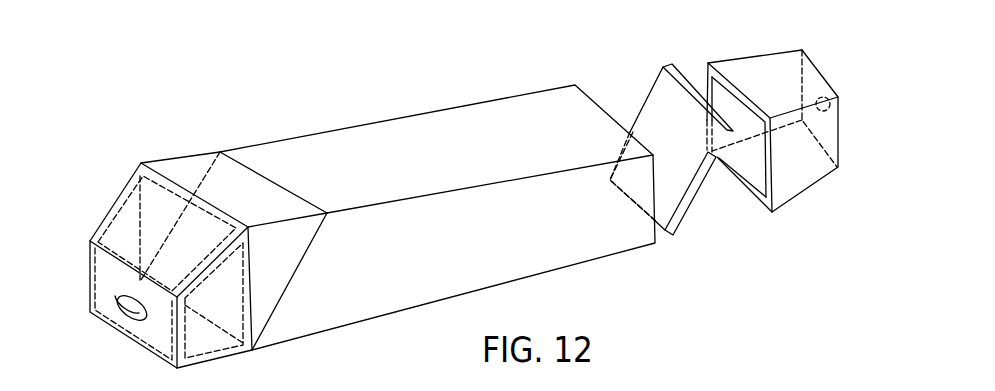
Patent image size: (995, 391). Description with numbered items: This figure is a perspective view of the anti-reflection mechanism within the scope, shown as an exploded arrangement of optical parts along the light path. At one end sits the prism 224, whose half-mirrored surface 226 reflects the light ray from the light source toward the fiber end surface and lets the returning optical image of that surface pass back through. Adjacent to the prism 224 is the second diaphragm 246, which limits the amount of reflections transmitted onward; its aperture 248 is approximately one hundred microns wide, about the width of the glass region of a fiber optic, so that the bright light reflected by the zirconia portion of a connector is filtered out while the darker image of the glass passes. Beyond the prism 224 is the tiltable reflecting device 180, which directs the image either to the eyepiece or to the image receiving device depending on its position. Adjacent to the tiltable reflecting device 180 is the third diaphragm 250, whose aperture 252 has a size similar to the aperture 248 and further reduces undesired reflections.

The tiltable reflecting device 180 is at (672, 190).
The prism 224 is at (405, 285).
The half-mirrored surface 226 is at (310, 248).
The second diaphragm 246 is at (127, 228).
The aperture 248 is at (134, 306).
The third diaphragm 250 is at (785, 67).
The aperture 252 is at (833, 97).